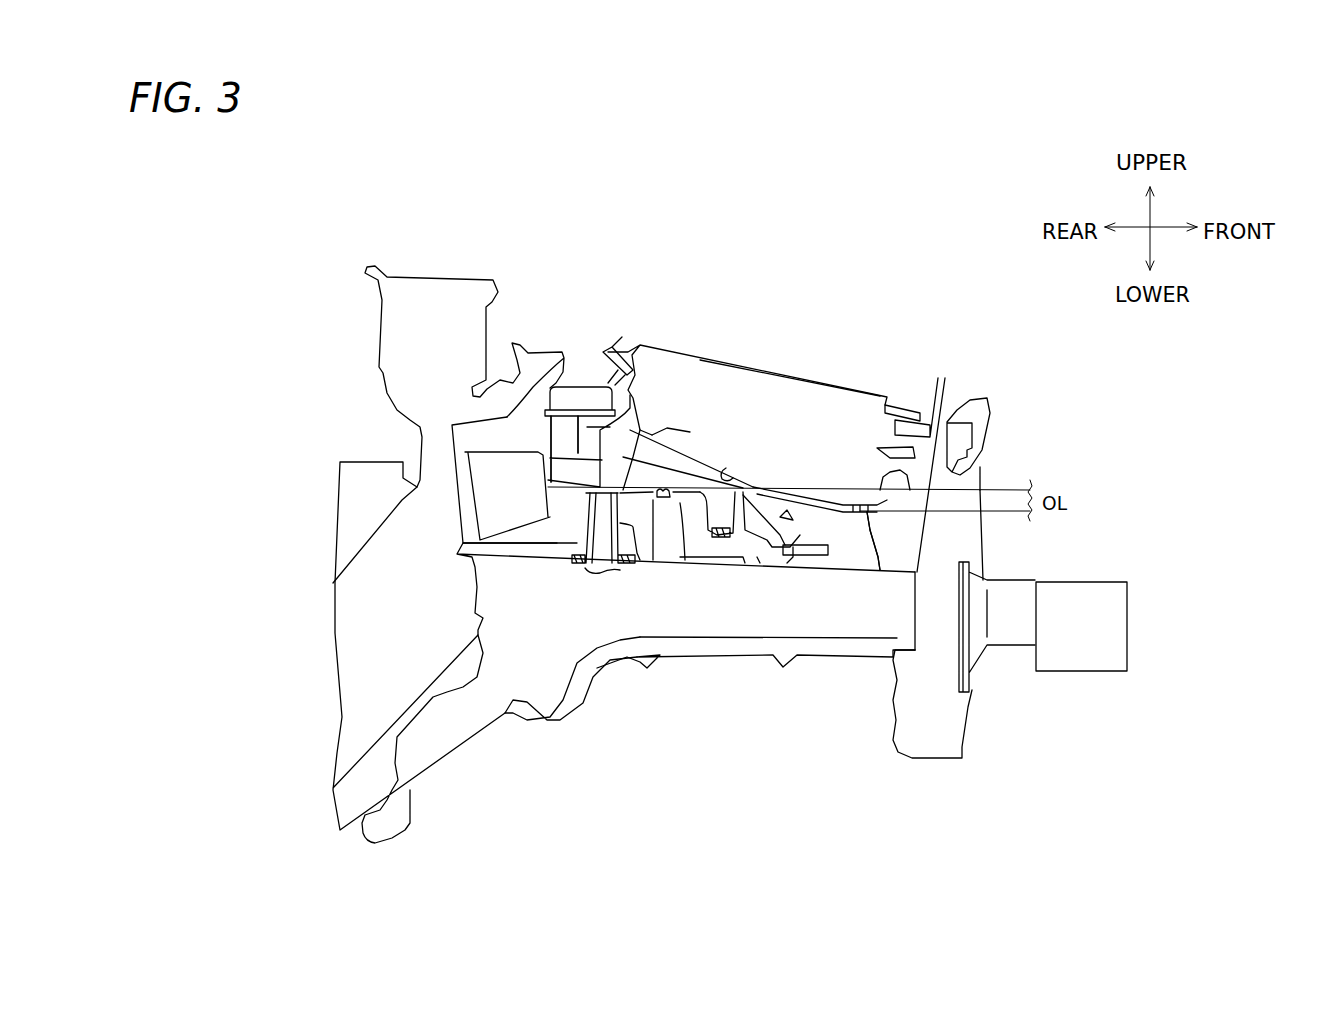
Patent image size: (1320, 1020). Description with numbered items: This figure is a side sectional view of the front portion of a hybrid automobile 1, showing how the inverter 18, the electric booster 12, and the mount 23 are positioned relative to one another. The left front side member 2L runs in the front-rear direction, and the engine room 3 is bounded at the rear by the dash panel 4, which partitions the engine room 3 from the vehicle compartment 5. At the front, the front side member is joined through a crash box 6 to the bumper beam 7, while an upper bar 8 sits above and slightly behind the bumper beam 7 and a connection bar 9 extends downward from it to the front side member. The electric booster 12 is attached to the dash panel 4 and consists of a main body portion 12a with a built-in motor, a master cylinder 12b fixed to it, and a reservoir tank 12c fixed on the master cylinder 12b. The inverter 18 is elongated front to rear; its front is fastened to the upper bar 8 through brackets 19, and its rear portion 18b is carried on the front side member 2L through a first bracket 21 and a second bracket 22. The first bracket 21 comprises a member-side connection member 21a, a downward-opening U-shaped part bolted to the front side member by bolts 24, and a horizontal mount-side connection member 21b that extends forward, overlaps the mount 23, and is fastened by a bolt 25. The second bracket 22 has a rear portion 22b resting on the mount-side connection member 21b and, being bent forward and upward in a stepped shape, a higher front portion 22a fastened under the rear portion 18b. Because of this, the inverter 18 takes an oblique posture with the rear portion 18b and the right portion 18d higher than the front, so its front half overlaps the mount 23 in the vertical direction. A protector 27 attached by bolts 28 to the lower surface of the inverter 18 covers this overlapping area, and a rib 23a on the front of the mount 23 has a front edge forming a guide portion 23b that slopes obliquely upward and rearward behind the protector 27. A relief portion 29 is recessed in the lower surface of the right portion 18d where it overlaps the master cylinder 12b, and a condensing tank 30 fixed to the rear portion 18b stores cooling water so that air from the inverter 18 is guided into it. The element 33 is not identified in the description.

The hybrid automobile 1 is at (894, 272).
The left front side member 2L is at (702, 648).
The engine room 3 is at (502, 254).
The dash panel 4 is at (472, 600).
The vehicle compartment 5 is at (336, 281).
The crash box 6 is at (1012, 640).
The bumper beam 7 is at (1128, 612).
The upper bar 8 is at (963, 420).
The connection bar 9 is at (978, 545).
The electric booster 12 is at (637, 292).
The main body portion 12a is at (535, 395).
The master cylinder 12b is at (573, 385).
The reservoir tank 12c is at (600, 385).
The inverter 18 is at (737, 358).
The rear portion 18b is at (620, 348).
The right portion 18d is at (812, 392).
The brackets 19 is at (905, 405).
The first bracket 21 is at (727, 598).
The member-side connection member 21a is at (610, 547).
The mount-side connection member 21b is at (700, 565).
The second bracket 22 is at (667, 477).
The front portion 22a is at (657, 470).
The rear portion 22b is at (552, 490).
The mount 23 is at (740, 565).
The rib 23a is at (770, 533).
The guide portion 23b is at (777, 517).
The bolts 24 is at (585, 568).
The bolt 25 is at (648, 482).
The protector 27 is at (822, 485).
The bolts 28 is at (867, 513).
The relief portion 29 is at (730, 473).
The condensing tank 30 is at (628, 437).
The rear bracket 33 is at (433, 286).